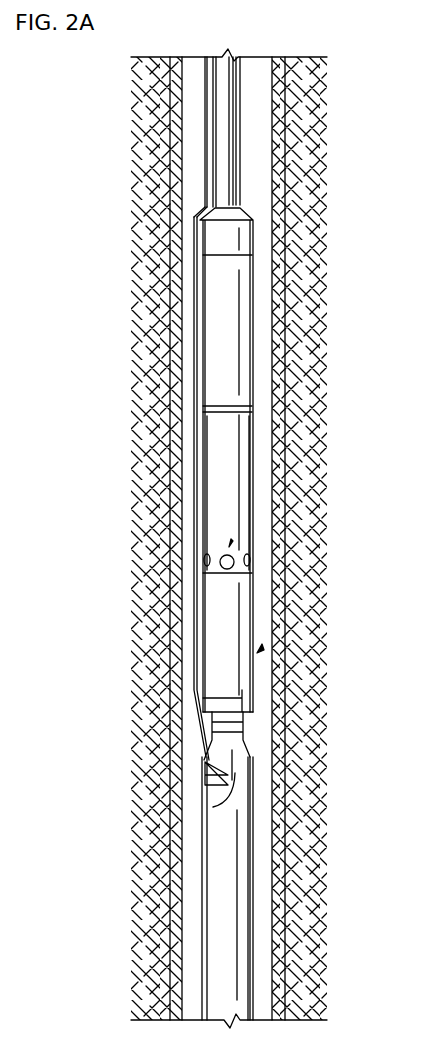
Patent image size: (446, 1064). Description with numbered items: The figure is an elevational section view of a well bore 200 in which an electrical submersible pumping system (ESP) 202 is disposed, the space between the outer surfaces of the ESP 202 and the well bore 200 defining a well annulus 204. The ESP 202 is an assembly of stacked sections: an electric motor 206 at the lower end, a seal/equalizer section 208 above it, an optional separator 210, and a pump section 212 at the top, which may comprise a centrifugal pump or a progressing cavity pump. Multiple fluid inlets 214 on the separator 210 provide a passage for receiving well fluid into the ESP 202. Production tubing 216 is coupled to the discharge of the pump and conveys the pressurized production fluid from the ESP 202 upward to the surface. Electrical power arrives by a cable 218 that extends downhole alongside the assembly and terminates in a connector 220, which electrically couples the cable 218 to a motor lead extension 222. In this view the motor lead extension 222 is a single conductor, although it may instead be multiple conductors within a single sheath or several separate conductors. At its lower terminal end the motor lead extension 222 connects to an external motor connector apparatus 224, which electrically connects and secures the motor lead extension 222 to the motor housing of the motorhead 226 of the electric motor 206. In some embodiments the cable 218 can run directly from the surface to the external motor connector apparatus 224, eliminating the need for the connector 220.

The well bore 200 is at (268, 482).
The electrical submersible pumping system 202 is at (258, 652).
The well annulus 204 is at (262, 766).
The electric motor 206 is at (242, 850).
The seal/equalizer section 208 is at (237, 686).
The separator 210 is at (235, 443).
The pump section 212 is at (238, 273).
The fluid inlets 214 is at (231, 543).
The production tubing 216 is at (229, 184).
The cable 218 is at (205, 196).
The connector 220 is at (200, 213).
The motor lead extension 222 is at (193, 346).
The external motor connector apparatus 224 is at (203, 768).
The motorhead 226 is at (207, 810).